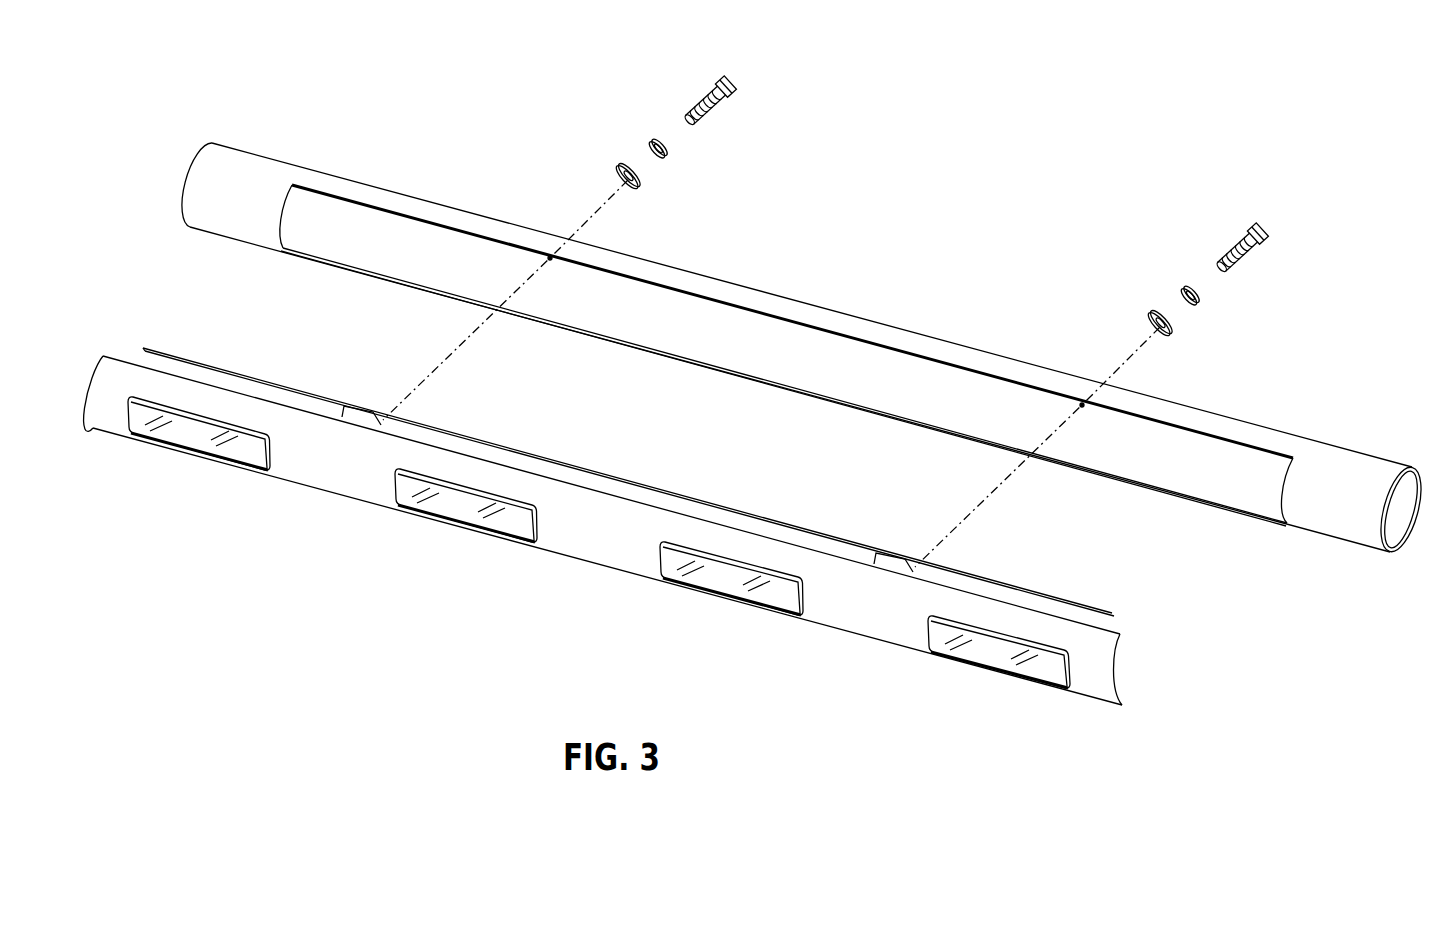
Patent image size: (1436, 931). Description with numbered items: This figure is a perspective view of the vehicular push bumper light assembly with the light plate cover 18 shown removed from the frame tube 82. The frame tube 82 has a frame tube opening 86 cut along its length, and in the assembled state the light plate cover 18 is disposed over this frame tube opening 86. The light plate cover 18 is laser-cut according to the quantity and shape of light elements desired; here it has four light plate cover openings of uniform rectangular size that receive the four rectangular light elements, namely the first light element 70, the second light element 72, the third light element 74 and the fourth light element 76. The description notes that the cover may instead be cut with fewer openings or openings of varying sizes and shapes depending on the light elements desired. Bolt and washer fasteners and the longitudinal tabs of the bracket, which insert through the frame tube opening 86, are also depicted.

The light plate cover 18 is at (603, 552).
The first light element 70 is at (192, 443).
The second light element 72 is at (478, 523).
The third light element 74 is at (730, 590).
The fourth light element 76 is at (1000, 663).
The frame tube 82 is at (1345, 450).
The frame tube opening 86 is at (692, 338).